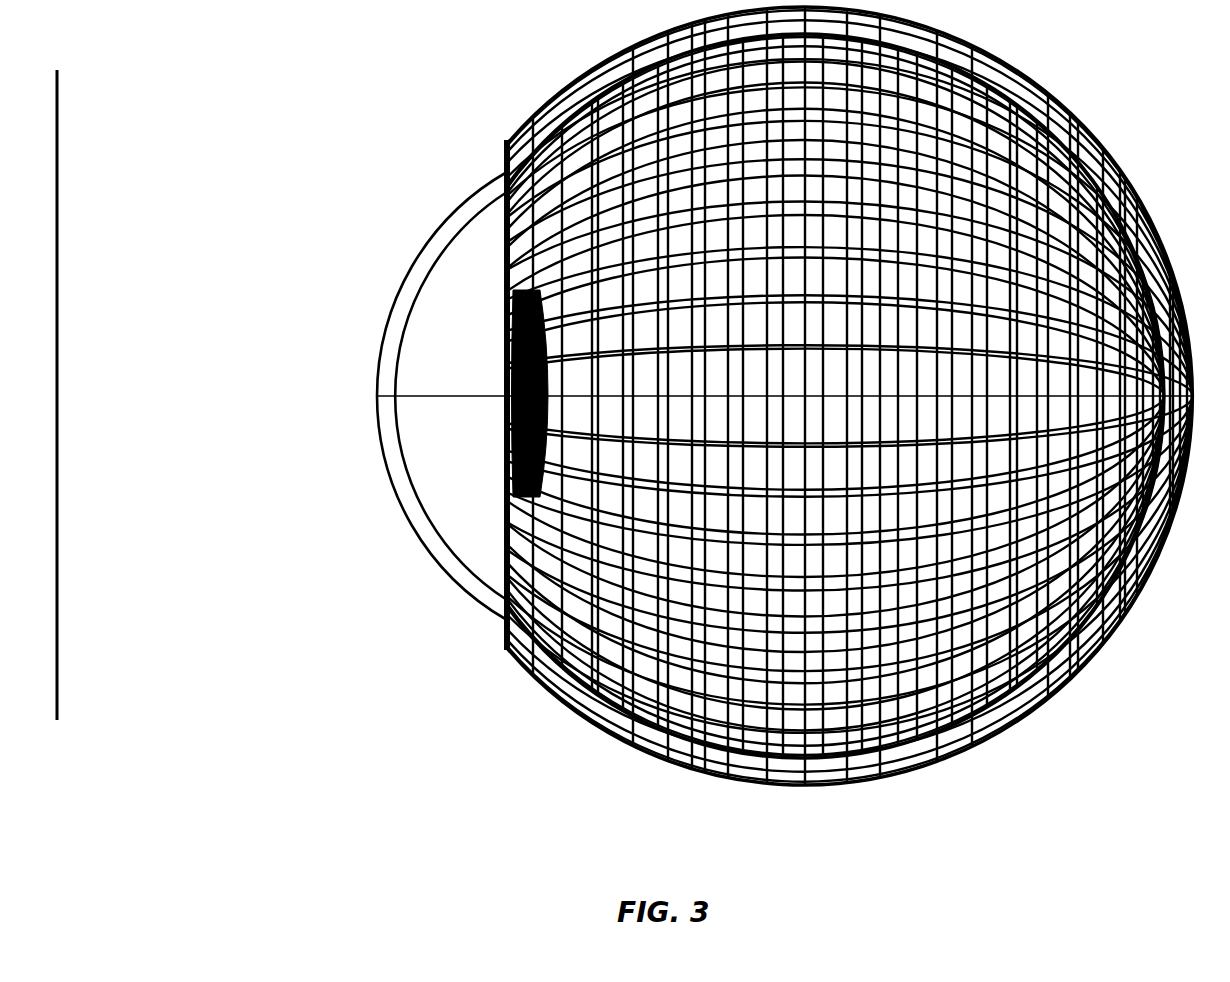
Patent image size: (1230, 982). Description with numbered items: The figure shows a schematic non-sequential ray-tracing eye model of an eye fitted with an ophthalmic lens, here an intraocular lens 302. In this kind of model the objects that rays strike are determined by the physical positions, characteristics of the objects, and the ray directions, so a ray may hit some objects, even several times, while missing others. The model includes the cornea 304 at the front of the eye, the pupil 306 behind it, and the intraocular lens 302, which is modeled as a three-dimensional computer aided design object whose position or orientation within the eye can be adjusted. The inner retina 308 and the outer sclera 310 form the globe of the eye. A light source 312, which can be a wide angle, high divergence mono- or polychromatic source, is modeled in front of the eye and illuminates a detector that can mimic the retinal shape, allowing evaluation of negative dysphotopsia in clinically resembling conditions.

The intraocular lens 302 is at (548, 410).
The cornea 304 is at (378, 410).
The pupil 306 is at (507, 583).
The retina 308 is at (806, 770).
The sclera 310 is at (1007, 740).
The light source 312 is at (57, 740).